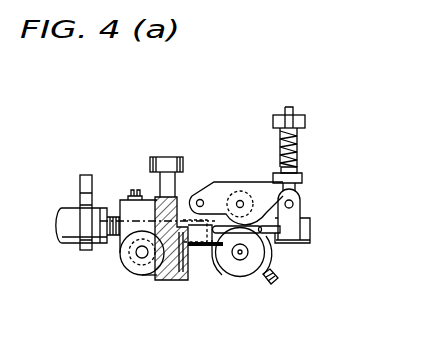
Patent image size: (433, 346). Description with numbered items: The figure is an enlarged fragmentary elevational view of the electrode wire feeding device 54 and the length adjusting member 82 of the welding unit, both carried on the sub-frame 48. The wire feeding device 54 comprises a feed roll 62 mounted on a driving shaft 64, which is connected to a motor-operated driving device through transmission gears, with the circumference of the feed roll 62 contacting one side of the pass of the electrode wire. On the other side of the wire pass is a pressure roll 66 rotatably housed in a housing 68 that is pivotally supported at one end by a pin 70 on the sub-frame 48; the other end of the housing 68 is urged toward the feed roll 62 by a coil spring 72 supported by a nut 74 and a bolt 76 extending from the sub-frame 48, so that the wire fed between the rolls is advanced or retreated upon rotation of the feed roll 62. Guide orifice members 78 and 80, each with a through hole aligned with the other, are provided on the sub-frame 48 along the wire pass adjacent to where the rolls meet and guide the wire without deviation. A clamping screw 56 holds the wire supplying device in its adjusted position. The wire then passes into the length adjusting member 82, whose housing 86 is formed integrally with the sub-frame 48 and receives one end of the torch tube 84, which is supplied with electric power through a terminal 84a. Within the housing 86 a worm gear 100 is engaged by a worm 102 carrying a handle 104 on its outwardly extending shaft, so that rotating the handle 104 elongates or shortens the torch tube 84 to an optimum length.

The sub-frame 48 is at (212, 243).
The wire feeding device 54 is at (248, 287).
The clamping screw 56 is at (276, 282).
The feed roll 62 is at (231, 262).
The driving shaft 64 is at (241, 254).
The pressure roll 66 is at (240, 191).
The housing 68 is at (226, 195).
The pin 70 is at (200, 199).
The coil spring 72 is at (293, 140).
The nut 74 is at (304, 118).
The bolt 76 is at (288, 107).
The guide orifice member 78 is at (268, 247).
The guide orifice member 80 is at (213, 212).
The length adjusting member 82 is at (121, 272).
The torch tube 84 is at (73, 217).
The terminal 84a is at (86, 175).
The housing 86 is at (124, 192).
The worm gear 100 is at (125, 248).
The worm 102 is at (160, 285).
The handle 104 is at (168, 158).